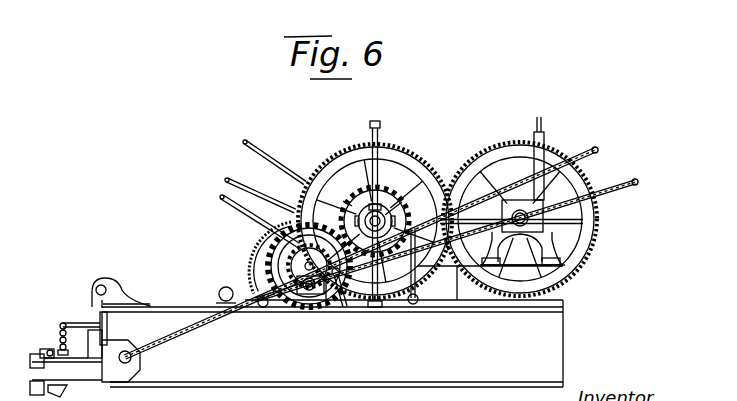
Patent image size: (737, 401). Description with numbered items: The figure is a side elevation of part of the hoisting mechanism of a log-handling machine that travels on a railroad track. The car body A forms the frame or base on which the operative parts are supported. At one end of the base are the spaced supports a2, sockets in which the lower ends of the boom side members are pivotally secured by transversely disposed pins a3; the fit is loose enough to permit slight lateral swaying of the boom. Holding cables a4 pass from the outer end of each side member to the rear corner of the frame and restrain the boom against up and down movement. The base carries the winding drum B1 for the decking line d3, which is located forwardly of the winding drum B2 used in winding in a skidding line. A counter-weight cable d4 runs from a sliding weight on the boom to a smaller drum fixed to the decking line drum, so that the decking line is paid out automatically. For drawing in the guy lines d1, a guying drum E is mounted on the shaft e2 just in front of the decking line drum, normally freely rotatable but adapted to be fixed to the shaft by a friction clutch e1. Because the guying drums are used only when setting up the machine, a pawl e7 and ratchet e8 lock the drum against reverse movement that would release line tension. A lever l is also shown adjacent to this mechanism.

The car body A is at (372, 372).
The spaced supports a2 is at (118, 298).
The transversely disposed pins a3 is at (95, 297).
The holding cables a4 is at (630, 183).
The winding drum B1 is at (352, 157).
The winding drum B2 is at (521, 152).
The guying drum E is at (262, 249).
The friction clutch e1 is at (406, 201).
The shaft e2 is at (311, 296).
The pawl e7 is at (339, 286).
The ratchet e8 is at (247, 277).
The lever l is at (306, 232).
The guy lines d1 is at (224, 201).
The decking line d3 is at (227, 180).
The counter-weight cable d4 is at (261, 151).